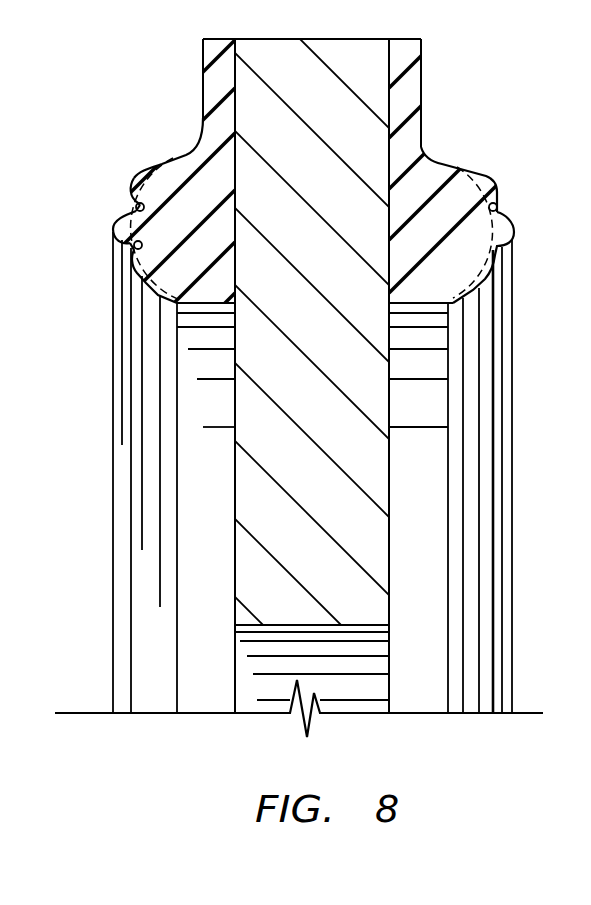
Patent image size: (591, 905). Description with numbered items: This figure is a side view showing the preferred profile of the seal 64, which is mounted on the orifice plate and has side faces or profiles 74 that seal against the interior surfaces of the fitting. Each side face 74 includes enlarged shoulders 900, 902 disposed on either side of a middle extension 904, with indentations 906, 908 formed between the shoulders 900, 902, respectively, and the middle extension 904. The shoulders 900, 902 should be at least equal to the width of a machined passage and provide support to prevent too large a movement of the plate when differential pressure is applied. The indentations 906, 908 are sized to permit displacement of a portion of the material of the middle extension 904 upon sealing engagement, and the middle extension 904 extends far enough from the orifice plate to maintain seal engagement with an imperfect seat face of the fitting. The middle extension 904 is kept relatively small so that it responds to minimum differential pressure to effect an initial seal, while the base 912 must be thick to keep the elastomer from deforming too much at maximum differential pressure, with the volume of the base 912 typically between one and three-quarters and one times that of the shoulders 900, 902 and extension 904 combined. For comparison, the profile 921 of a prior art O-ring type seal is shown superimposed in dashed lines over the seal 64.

The base 912 is at (185, 167).
The side faces 74 is at (138, 170).
The enlarged shoulder 900 is at (131, 183).
The indentation 906 is at (134, 207).
The middle extension 904 is at (113, 228).
The indentation 908 is at (128, 243).
The enlarged shoulder 902 is at (130, 258).
The seal 64 is at (152, 290).
The profile 921 is at (497, 207).